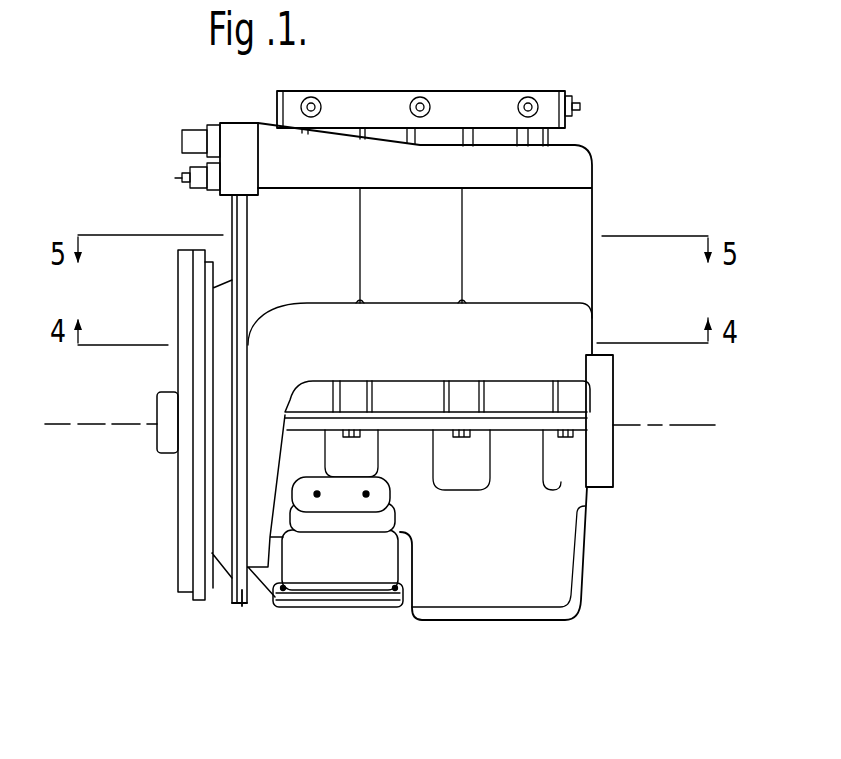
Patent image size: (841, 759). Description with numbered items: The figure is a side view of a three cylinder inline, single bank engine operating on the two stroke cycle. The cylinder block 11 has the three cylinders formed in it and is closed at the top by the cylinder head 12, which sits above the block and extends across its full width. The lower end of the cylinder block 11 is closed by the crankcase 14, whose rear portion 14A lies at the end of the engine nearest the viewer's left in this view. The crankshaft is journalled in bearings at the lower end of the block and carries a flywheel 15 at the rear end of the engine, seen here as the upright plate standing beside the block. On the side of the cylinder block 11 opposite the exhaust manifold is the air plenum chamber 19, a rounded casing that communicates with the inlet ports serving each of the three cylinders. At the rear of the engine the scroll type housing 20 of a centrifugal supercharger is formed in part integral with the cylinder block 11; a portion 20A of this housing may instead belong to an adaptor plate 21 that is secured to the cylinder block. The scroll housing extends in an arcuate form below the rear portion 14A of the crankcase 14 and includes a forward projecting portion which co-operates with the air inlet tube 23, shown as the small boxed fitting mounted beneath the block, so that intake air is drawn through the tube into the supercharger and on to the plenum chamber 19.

The cylinder block 11 is at (417, 266).
The cylinder head 12 is at (568, 170).
The crankcase 14 is at (523, 576).
The rear portion of the crankcase 14A is at (298, 461).
The flywheel 15 is at (190, 568).
The air plenum chamber 19 is at (535, 352).
The scroll type housing 20 is at (277, 415).
The scroll type housing portion 20A is at (224, 347).
The adaptor plate 21 is at (241, 582).
The air inlet tube 23 is at (363, 548).